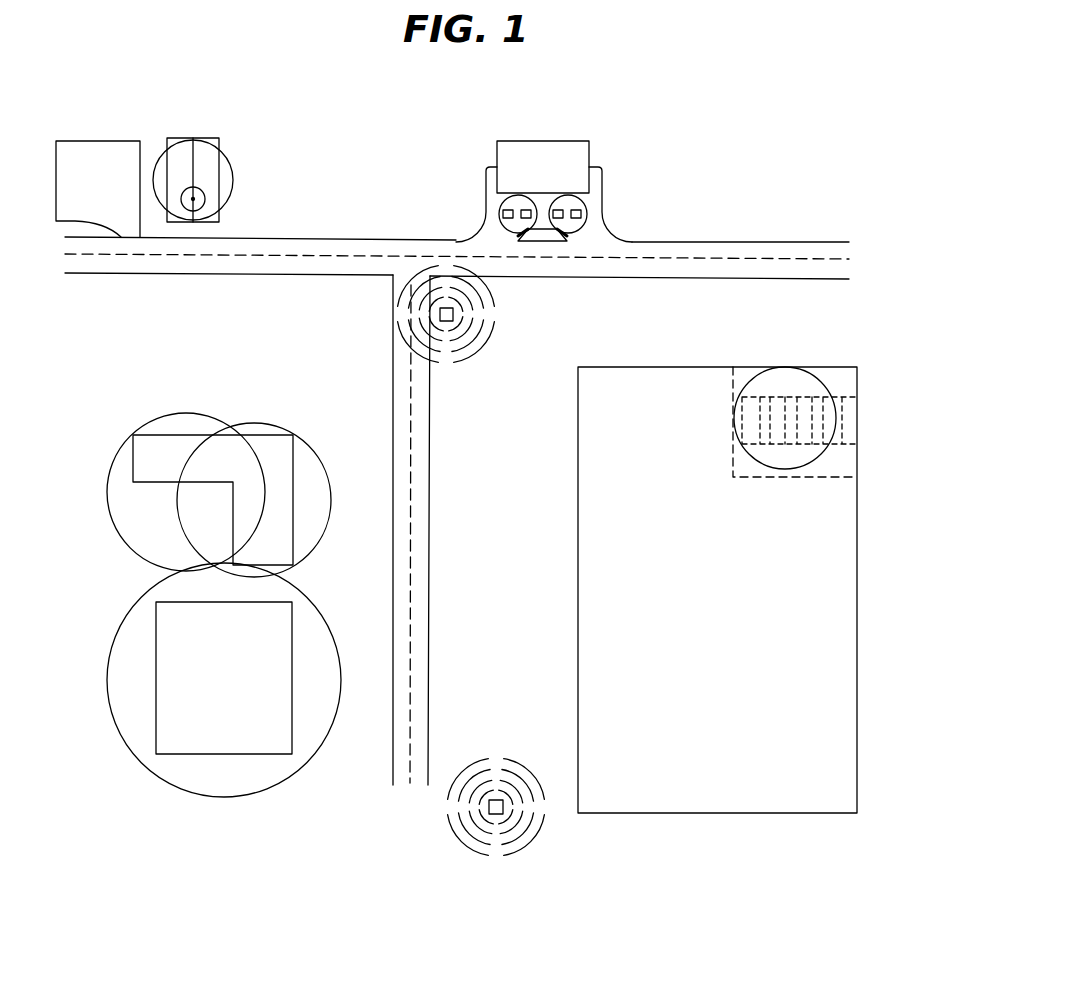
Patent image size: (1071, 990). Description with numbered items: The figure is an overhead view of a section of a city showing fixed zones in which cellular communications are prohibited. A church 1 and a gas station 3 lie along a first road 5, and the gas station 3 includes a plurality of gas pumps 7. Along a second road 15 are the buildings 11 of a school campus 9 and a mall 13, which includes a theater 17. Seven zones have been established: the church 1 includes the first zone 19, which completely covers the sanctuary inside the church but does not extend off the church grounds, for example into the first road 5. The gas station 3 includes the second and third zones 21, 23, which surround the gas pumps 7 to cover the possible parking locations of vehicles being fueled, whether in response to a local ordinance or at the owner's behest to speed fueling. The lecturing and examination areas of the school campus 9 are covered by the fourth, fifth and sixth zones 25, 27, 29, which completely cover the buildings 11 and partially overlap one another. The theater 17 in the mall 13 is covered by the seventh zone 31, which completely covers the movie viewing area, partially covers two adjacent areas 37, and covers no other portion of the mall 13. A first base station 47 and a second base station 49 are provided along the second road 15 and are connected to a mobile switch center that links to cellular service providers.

The church 1 is at (221, 145).
The gas station 3 is at (540, 141).
The first road 5 is at (750, 242).
The gas pumps 7 is at (503, 214).
The school campus 9 is at (68, 509).
The buildings 11 is at (293, 470).
The mall 13 is at (97, 141).
The second road 15 is at (429, 705).
The theater 17 is at (733, 462).
The first zone 19 is at (233, 181).
The second zone 21 is at (498, 232).
The third zone 23 is at (580, 232).
The fourth zone 25 is at (175, 413).
The fifth zone 27 is at (253, 423).
The sixth zone 29 is at (107, 676).
The seventh zone 31 is at (750, 378).
The adjacent areas 37 is at (840, 380).
The first base station 47 is at (445, 322).
The second base station 49 is at (488, 809).